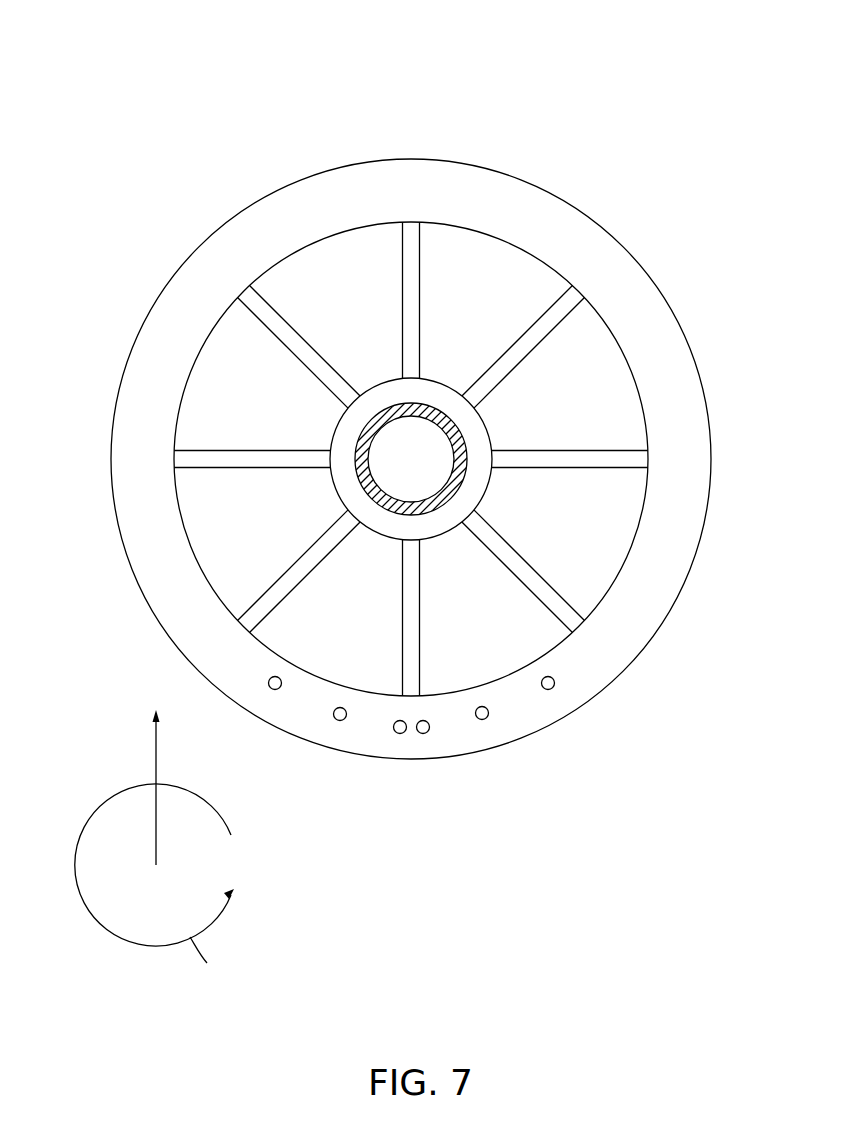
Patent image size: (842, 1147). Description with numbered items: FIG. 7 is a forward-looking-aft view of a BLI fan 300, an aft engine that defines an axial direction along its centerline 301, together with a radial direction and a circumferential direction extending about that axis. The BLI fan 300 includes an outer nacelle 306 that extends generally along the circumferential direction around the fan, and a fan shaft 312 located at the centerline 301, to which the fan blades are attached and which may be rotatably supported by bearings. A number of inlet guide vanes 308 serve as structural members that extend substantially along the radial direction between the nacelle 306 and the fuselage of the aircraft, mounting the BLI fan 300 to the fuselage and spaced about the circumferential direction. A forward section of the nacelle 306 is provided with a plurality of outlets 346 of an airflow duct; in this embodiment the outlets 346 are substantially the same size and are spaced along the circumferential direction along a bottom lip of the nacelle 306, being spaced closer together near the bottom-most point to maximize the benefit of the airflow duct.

The BLI fan 300 is at (616, 63).
The centerline 301 is at (411, 459).
The nacelle 306 is at (315, 187).
The inlet guide vanes 308 is at (420, 287).
The fan shaft 312 is at (437, 410).
The outlets 346 is at (426, 746).